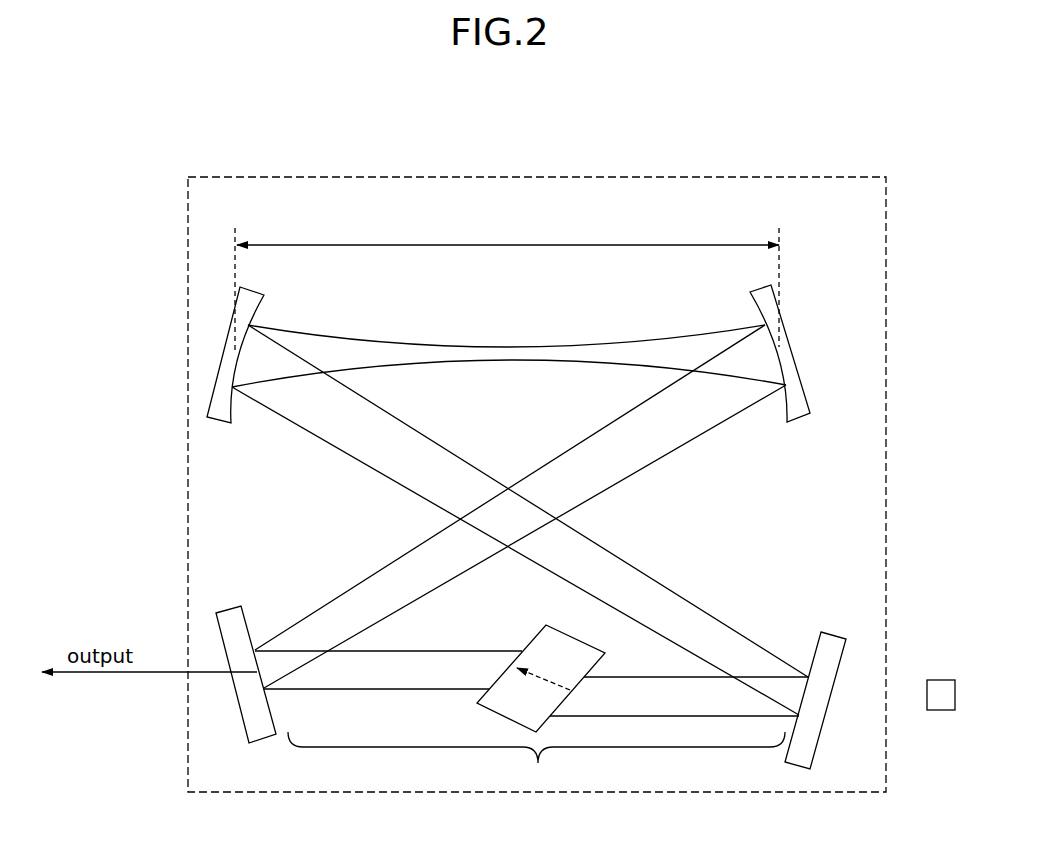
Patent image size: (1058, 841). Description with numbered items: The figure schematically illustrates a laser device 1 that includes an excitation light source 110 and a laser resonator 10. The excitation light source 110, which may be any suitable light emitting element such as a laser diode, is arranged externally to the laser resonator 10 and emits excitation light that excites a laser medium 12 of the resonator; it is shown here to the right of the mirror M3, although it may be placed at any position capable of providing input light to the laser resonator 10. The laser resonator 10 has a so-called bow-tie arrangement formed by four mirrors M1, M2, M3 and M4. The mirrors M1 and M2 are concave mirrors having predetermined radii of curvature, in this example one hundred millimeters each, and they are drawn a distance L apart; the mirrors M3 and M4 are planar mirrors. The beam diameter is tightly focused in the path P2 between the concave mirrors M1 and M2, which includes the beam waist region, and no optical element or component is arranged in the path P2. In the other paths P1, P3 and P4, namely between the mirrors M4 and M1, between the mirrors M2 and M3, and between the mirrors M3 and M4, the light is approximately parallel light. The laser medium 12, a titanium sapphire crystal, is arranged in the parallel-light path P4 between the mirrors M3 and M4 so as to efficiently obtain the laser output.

The laser device 1 is at (130, 164).
The laser resonator 10 is at (750, 172).
The laser medium 12 is at (540, 630).
The excitation light source 110 is at (940, 710).
The concave mirror M1 is at (797, 422).
The concave mirror M2 is at (220, 423).
The planar mirror M3 is at (835, 632).
The planar mirror M4 is at (225, 607).
The distance between concave mirrors L is at (507, 286).
The optical path P1 is at (520, 506).
The path P2 is at (509, 350).
The optical path P3 is at (520, 520).
The optical path P4 is at (531, 723).